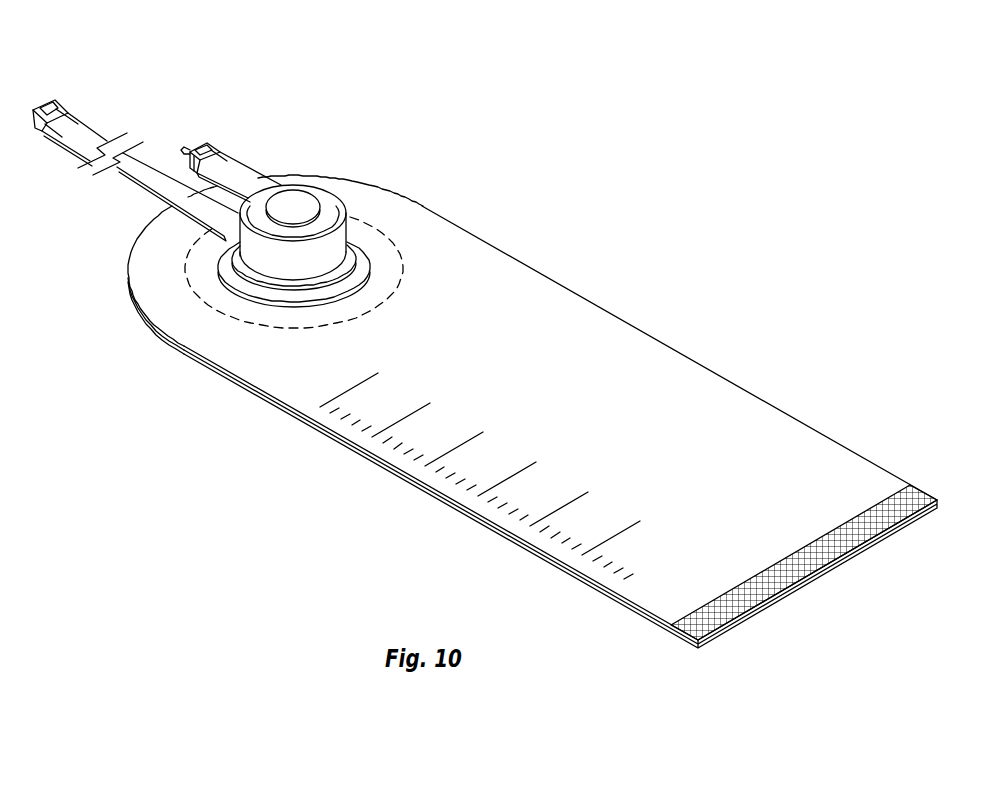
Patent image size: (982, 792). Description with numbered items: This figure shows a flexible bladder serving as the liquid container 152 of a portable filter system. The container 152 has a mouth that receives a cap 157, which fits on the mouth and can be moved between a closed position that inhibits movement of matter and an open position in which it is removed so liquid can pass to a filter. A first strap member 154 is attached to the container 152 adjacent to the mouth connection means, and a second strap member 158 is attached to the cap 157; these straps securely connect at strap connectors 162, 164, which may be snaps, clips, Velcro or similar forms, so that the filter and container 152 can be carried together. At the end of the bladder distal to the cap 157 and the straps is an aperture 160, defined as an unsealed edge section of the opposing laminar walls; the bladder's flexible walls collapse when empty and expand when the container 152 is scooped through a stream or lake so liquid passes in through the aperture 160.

The liquid container 152 is at (503, 282).
The first strap member 154 is at (143, 178).
The cap 157 is at (338, 245).
The second strap member 158 is at (241, 180).
The aperture 160 is at (853, 523).
The strap connector 162 is at (53, 100).
The strap connector 164 is at (206, 146).